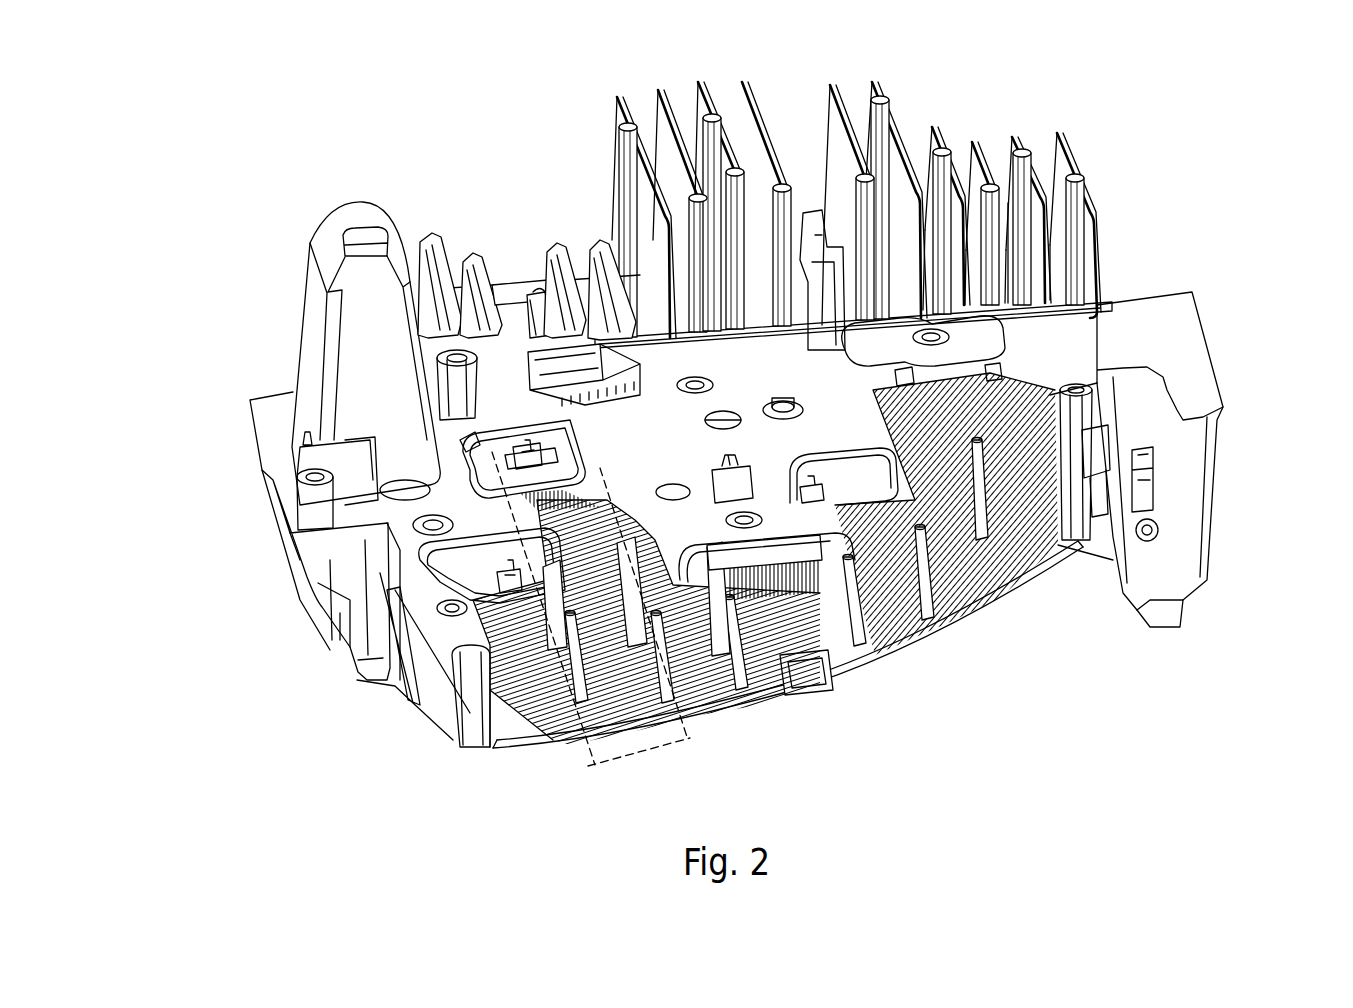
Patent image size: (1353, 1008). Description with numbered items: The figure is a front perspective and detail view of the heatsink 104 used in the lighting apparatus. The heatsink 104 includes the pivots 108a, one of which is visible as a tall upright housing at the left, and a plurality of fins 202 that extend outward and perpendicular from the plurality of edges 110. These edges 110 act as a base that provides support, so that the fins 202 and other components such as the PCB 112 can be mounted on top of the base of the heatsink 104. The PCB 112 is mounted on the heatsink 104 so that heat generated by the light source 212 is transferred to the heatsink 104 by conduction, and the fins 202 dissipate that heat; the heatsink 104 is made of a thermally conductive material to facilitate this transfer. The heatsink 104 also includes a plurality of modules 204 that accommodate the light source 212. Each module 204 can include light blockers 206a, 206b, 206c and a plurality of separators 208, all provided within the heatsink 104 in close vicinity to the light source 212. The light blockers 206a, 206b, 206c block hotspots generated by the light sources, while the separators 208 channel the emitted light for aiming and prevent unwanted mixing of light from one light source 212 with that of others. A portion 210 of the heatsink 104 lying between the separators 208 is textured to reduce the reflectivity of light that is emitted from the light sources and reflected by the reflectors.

The heatsink 104 is at (200, 185).
The plurality of edges 110 is at (250, 432).
The pivot 108a is at (300, 291).
The PCB 112 is at (760, 366).
The plurality of fins 202 is at (612, 115).
The plurality of modules 204 is at (690, 731).
The light blocker 206a is at (487, 573).
The light blocker 206b is at (531, 446).
The light blocker 206c is at (870, 496).
The plurality of separators 208 is at (843, 573).
The textured portion 210 is at (550, 728).
The light source 212 is at (481, 438).